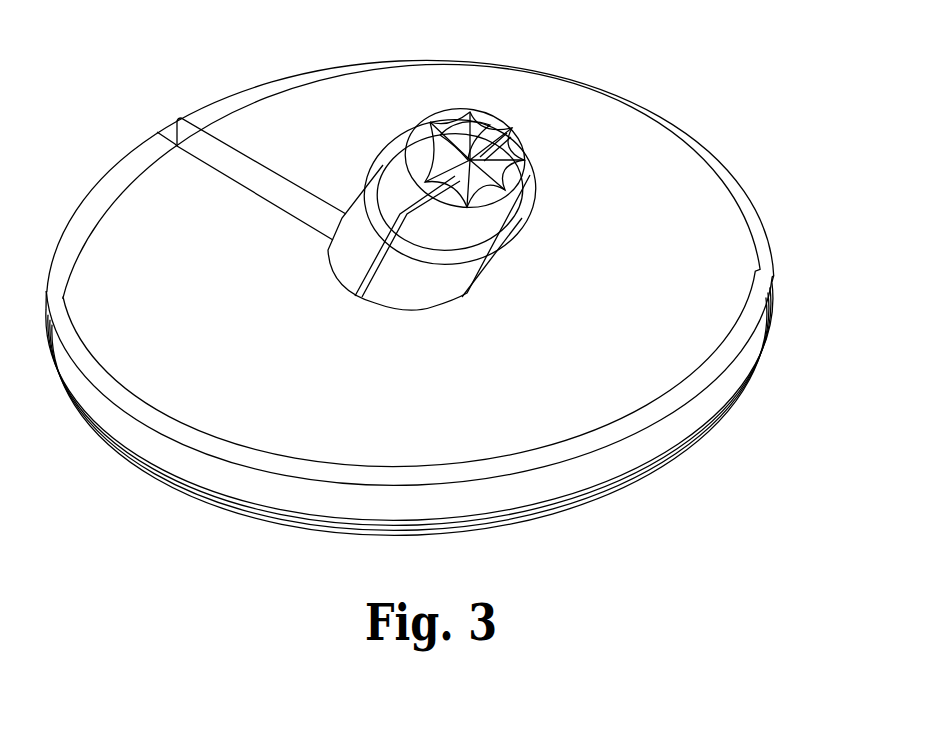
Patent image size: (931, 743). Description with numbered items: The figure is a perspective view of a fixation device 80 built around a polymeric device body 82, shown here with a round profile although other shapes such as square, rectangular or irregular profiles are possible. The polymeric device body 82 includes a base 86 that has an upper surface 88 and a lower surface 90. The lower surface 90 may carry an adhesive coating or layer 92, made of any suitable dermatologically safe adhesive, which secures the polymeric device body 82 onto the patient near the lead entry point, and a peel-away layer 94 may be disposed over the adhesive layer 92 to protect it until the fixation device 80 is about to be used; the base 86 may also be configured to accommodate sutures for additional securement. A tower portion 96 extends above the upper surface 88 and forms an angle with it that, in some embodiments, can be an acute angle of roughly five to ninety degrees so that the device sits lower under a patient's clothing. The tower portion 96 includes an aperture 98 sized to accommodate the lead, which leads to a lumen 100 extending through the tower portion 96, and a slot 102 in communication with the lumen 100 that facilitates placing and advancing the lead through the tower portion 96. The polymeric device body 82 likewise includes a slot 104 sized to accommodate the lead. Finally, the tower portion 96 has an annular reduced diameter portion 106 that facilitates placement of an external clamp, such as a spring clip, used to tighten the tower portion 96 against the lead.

The fixation device 80 is at (120, 82).
The polymeric device body 82 is at (688, 107).
The base 86 is at (773, 211).
The upper surface 88 is at (655, 291).
The lower surface 90 is at (708, 460).
The adhesive coating or layer 92 is at (257, 503).
The peel-away layer 94 is at (187, 497).
The tower portion 96 is at (395, 136).
The aperture 98 is at (505, 120).
The lumen 100 is at (520, 163).
The slot 102 is at (468, 112).
The slot 104 is at (229, 158).
The annular reduced diameter portion 106 is at (430, 293).